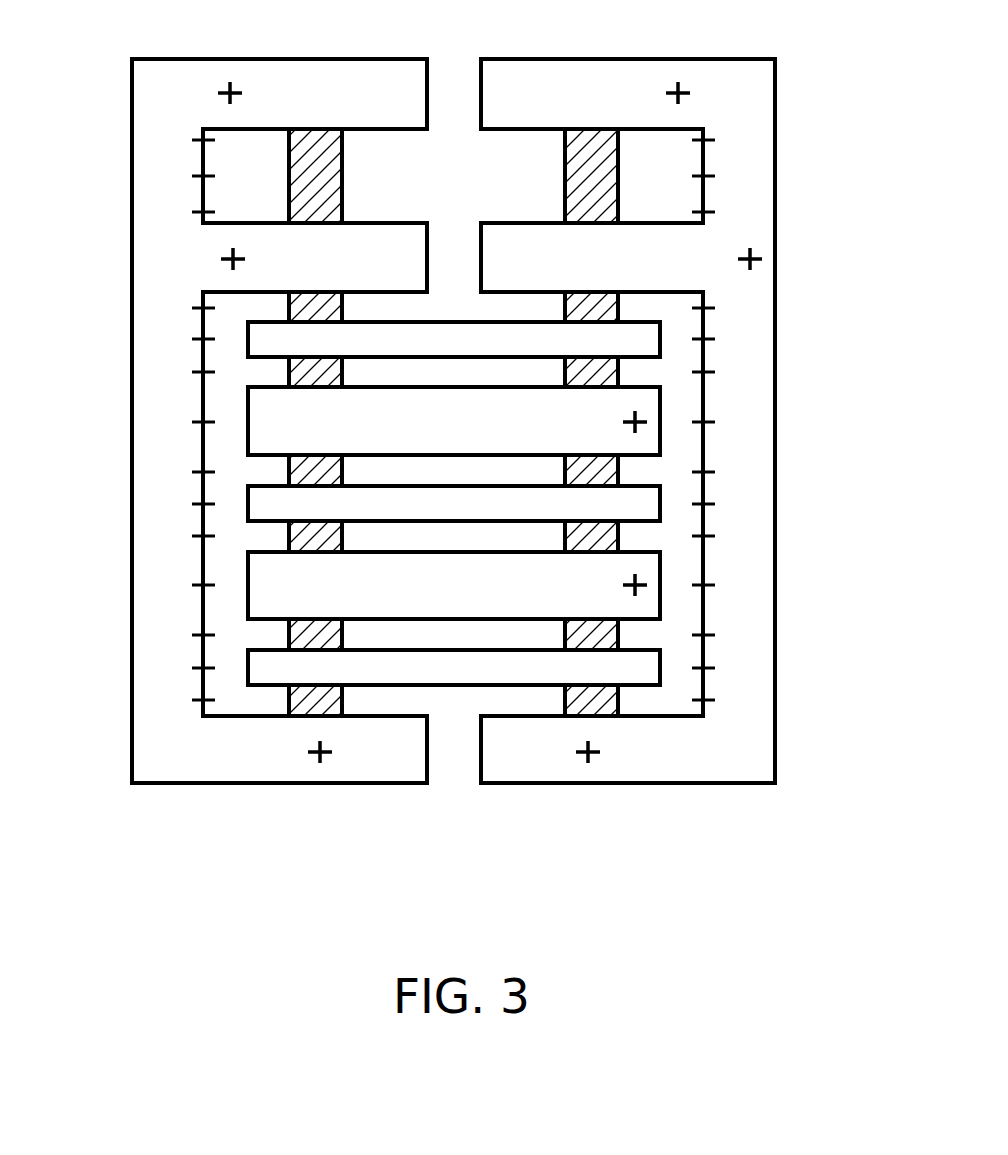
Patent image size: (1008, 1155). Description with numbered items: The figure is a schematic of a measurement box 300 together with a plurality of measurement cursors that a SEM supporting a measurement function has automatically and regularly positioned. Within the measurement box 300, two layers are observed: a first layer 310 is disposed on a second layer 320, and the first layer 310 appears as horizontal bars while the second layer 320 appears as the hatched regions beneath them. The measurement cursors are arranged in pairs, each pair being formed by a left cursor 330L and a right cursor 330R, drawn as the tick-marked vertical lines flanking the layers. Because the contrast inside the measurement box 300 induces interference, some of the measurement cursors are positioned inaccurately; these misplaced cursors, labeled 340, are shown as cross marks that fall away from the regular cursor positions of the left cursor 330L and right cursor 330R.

The measurement box 300 is at (827, 941).
The first layer 310 is at (247, 567).
The second layer 320 is at (288, 635).
The left cursor 330L is at (200, 300).
The right cursor 330R is at (716, 176).
The inaccurately positioned measurement cursors 340 is at (216, 93).